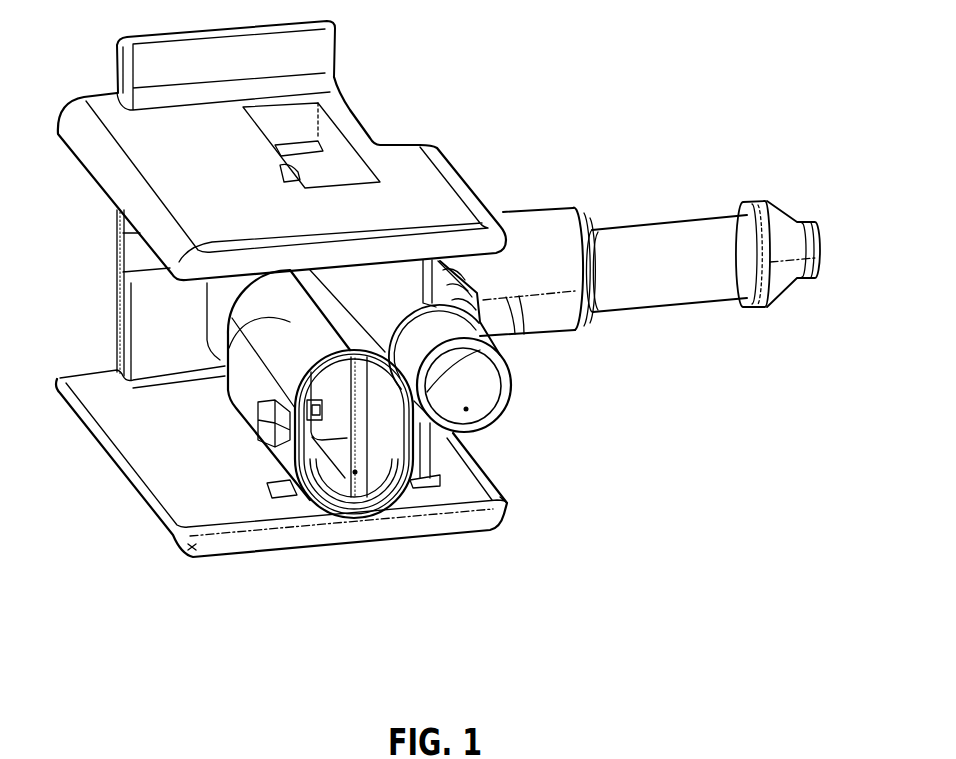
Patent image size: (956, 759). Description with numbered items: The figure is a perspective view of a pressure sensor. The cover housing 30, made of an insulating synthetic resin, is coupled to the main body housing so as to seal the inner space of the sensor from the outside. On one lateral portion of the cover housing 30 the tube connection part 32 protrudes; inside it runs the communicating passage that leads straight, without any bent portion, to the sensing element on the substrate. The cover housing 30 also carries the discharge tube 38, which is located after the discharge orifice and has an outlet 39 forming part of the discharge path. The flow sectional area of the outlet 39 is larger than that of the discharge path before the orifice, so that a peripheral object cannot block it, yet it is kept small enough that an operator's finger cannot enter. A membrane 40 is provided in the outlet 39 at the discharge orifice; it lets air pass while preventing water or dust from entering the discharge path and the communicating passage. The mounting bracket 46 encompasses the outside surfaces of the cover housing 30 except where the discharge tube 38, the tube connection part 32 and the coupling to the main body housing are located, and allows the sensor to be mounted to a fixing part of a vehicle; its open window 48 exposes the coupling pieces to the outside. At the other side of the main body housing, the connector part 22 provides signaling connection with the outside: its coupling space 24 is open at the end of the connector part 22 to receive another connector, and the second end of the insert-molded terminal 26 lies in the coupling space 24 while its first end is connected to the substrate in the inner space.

The cover housing 30 is at (441, 146).
The open window 48 is at (300, 118).
The tube connection part 32 is at (675, 232).
The discharge tube 38 is at (496, 399).
The membrane 40 is at (460, 366).
The outlet 39 is at (468, 410).
The connector part 22 is at (267, 430).
The coupling space 24 is at (357, 474).
The terminal 26 is at (372, 440).
The mounting bracket 46 is at (187, 557).